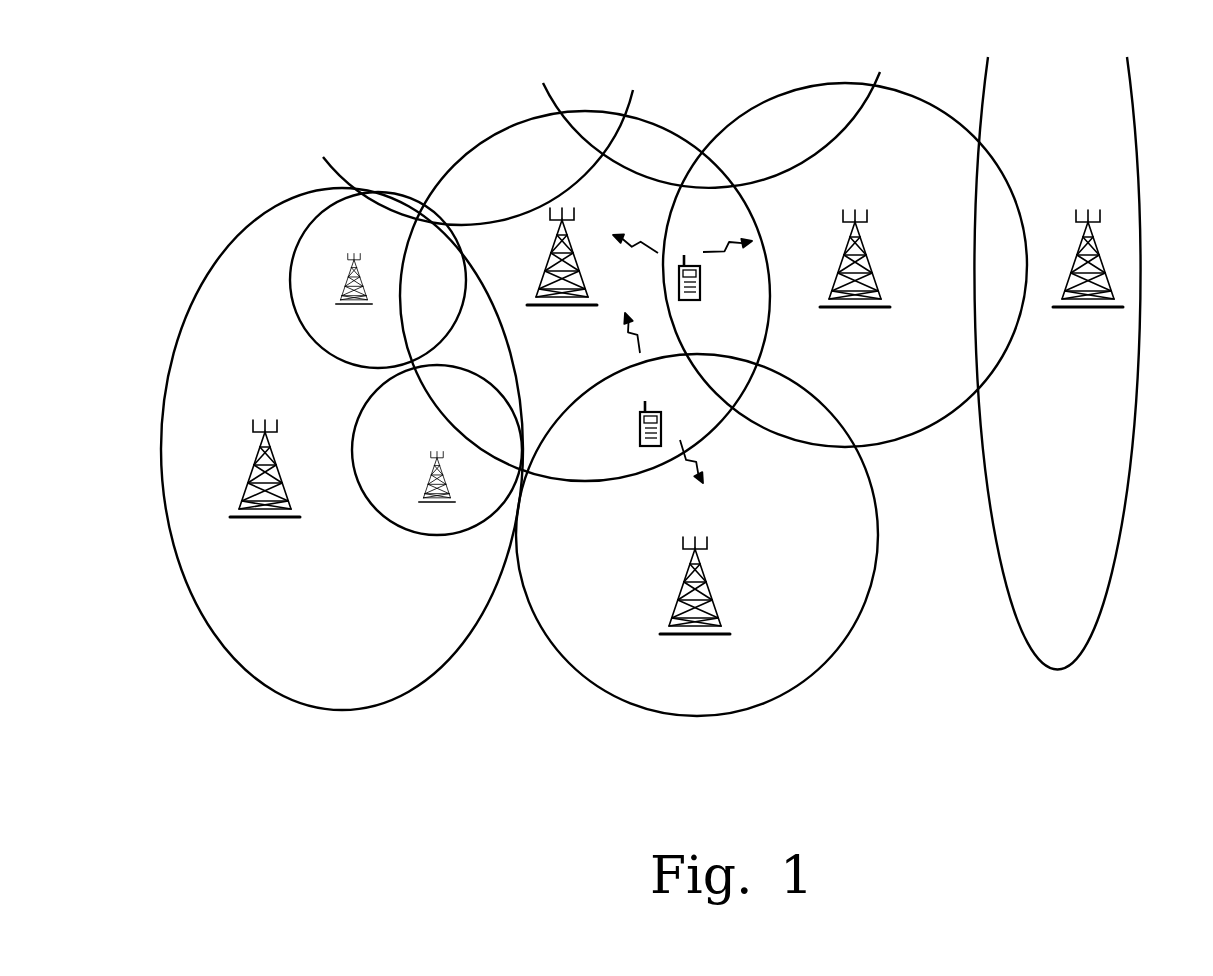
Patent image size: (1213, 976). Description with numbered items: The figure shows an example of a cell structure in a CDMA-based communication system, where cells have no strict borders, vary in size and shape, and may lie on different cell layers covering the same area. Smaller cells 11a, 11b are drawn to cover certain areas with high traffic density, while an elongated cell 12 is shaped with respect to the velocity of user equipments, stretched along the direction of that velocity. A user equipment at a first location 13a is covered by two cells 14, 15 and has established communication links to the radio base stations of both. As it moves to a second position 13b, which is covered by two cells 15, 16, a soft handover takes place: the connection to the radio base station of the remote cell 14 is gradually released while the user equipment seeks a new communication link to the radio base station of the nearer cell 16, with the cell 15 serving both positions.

The smaller cell 11a is at (323, 213).
The smaller cell 11b is at (425, 542).
The elongated cell 12 is at (1143, 302).
The first location of user equipment 13a is at (712, 293).
The second position of user equipment 13b is at (630, 442).
The remote cell 14 is at (903, 455).
The cell 15 is at (595, 102).
The nearer cell 16 is at (848, 658).